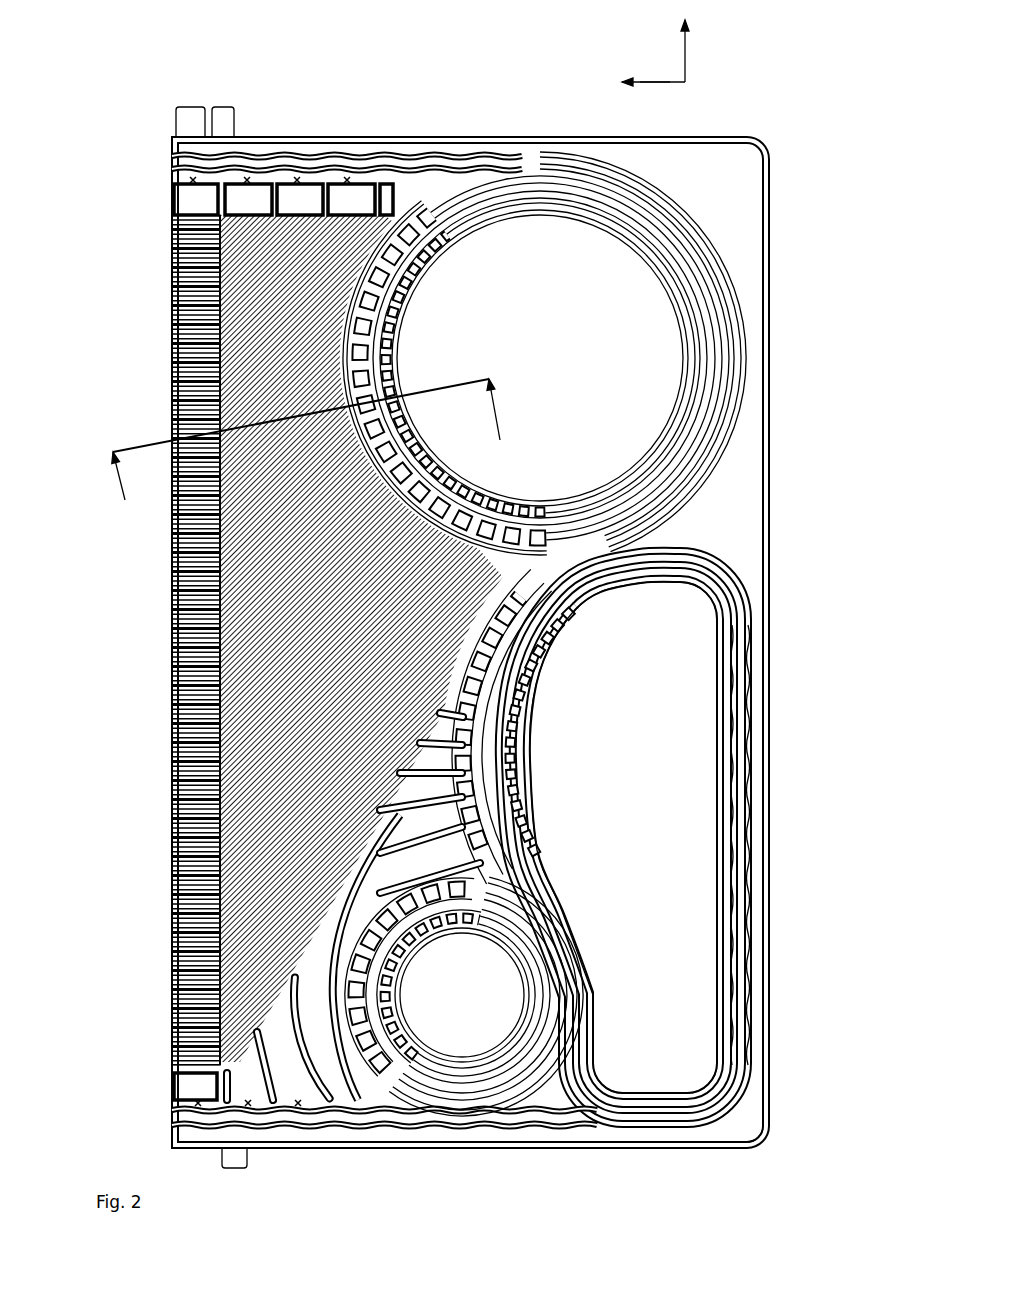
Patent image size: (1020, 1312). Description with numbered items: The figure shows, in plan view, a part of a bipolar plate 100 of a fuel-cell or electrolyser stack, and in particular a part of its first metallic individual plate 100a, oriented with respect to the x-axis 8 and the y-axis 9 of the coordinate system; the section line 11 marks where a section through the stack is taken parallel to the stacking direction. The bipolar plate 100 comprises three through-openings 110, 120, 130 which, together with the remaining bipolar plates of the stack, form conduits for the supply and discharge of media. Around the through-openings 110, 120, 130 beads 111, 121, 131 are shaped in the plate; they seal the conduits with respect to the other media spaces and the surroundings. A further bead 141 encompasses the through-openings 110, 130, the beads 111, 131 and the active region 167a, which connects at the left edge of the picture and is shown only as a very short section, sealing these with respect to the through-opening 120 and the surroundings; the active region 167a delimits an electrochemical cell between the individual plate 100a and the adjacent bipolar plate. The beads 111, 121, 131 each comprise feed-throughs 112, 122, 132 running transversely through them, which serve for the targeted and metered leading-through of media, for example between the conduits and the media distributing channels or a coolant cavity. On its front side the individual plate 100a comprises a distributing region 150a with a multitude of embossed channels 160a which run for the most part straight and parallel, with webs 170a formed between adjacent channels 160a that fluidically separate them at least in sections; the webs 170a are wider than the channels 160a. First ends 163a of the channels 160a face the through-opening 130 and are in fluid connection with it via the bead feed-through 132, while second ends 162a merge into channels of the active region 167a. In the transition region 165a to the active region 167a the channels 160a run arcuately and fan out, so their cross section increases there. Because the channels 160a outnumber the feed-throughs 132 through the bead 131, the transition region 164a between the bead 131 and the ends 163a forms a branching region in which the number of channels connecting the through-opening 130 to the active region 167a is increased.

The bipolar plate 100 is at (776, 1147).
The first metallic individual plate 100a is at (762, 965).
The through-opening 110 is at (479, 1035).
The bead 111 is at (492, 1095).
The feed-through 112 is at (421, 947).
The through-opening 120 is at (660, 808).
The bead 121 is at (752, 888).
The feed-through 122 is at (547, 657).
The through-opening 130 is at (576, 356).
The bead 131 is at (720, 300).
The feed-through 132 is at (428, 265).
The further bead 141 is at (278, 155).
The distributing region 150a is at (320, 855).
The channels 160a is at (218, 630).
The second ends of the channels 162a is at (235, 1168).
The first ends of the channels 163a is at (472, 573).
The transition region 164a is at (400, 207).
The transition region 165a is at (222, 107).
The active region 167a is at (190, 107).
The web 170a is at (216, 606).
The section line 11 is at (147, 432).
The x-axis 8 is at (692, 34).
The y-axis 9 is at (641, 88).